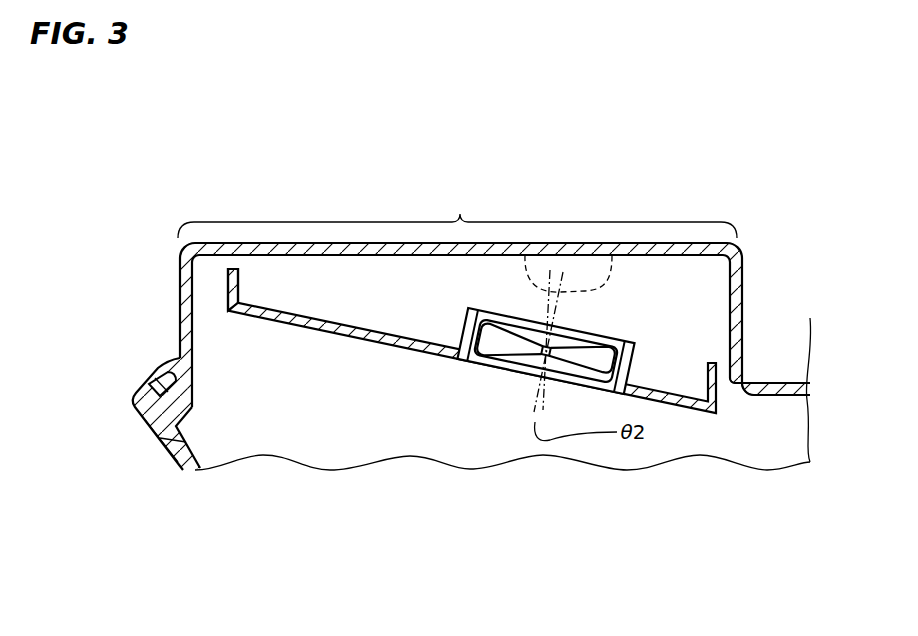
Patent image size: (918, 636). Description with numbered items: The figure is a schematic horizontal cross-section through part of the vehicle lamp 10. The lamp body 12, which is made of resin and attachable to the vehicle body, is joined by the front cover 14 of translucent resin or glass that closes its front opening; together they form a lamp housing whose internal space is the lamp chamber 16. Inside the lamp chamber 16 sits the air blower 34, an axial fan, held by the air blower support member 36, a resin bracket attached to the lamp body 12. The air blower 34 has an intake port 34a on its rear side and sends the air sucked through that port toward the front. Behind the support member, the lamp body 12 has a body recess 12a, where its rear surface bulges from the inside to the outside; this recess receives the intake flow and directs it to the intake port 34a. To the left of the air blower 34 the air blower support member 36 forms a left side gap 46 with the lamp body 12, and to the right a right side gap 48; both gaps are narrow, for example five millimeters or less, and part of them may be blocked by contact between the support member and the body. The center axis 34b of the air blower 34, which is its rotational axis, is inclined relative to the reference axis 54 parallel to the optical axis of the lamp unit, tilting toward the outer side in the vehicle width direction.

The vehicle lamp 10 is at (483, 609).
The lamp body 12 is at (181, 350).
The body recess 12a is at (457, 213).
The front cover 14 is at (150, 421).
The lamp chamber 16 is at (170, 447).
The air blower 34 is at (483, 370).
The intake port 34a is at (611, 330).
The center axis 34b is at (610, 270).
The air blower support member 36 is at (363, 341).
The left side gap 46 is at (234, 264).
The right side gap 48 is at (723, 376).
The reference axis 54 is at (528, 268).